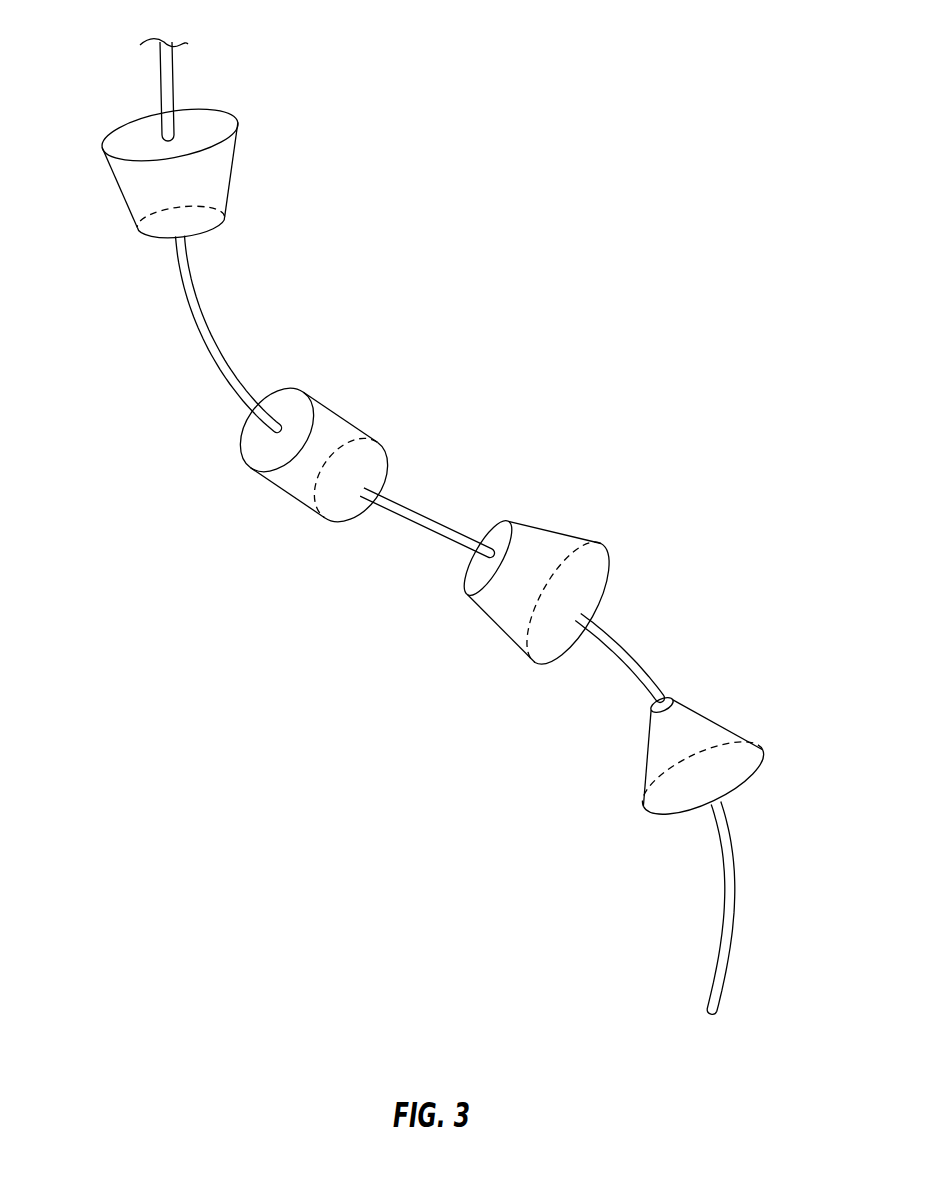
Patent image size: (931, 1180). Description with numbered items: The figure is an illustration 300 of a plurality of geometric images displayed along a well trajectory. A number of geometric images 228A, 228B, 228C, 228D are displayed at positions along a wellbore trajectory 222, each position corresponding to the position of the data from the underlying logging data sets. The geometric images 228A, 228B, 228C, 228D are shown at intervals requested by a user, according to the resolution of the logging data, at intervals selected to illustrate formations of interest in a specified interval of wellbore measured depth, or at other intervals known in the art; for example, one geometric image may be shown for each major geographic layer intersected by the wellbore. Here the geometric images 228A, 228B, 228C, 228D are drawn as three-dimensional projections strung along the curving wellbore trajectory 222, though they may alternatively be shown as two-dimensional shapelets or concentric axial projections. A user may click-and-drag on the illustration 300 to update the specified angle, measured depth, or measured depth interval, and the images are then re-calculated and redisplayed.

The illustration 300 is at (585, 100).
The wellbore trajectory 222 is at (190, 316).
The geometric image 228A is at (232, 175).
The geometric image 228B is at (285, 493).
The geometric image 228C is at (498, 632).
The geometric image 228D is at (710, 712).